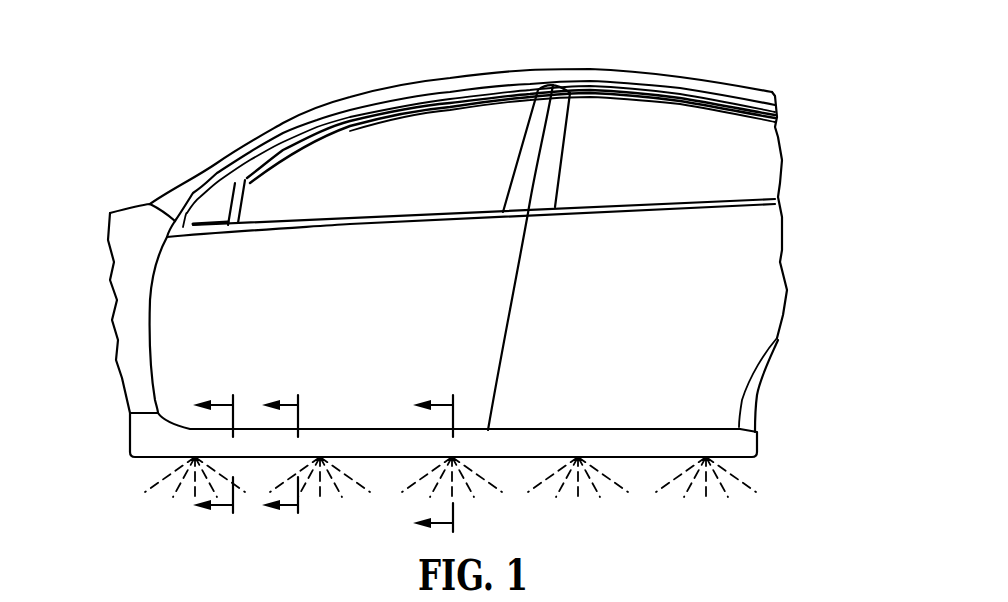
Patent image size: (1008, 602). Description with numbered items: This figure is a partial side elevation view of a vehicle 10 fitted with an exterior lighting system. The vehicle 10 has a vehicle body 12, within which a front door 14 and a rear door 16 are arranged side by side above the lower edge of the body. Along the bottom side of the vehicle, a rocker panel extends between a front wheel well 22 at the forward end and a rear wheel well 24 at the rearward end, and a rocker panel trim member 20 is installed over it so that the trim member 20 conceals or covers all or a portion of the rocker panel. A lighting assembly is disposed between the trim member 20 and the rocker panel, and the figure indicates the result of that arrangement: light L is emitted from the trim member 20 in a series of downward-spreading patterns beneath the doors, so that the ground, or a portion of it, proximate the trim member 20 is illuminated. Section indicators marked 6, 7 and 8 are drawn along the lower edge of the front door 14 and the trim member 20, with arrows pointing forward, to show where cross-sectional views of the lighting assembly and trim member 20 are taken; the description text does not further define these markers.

The vehicle 10 is at (206, 72).
The vehicle body 12 is at (413, 80).
The front door 14 is at (346, 338).
The rear door 16 is at (653, 342).
The rocker panel trim member 20 is at (757, 440).
The front wheel well 22 is at (121, 373).
The rear wheel well 24 is at (778, 340).
The section line 6- 6 is at (446, 465).
The section line 7- 7 is at (292, 457).
The section line 8- 8 is at (225, 457).
The light L is at (618, 487).